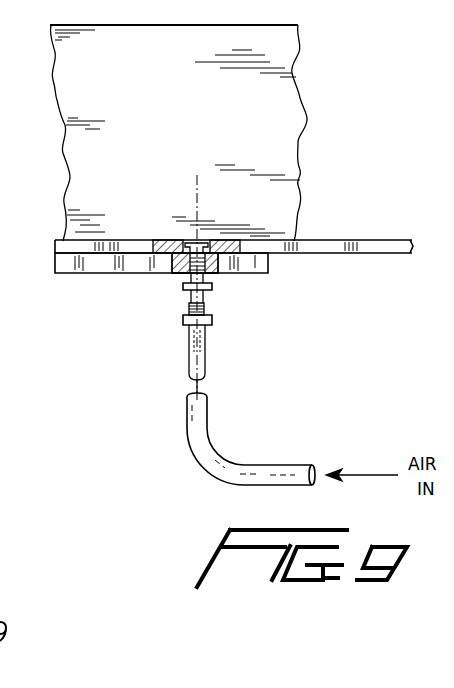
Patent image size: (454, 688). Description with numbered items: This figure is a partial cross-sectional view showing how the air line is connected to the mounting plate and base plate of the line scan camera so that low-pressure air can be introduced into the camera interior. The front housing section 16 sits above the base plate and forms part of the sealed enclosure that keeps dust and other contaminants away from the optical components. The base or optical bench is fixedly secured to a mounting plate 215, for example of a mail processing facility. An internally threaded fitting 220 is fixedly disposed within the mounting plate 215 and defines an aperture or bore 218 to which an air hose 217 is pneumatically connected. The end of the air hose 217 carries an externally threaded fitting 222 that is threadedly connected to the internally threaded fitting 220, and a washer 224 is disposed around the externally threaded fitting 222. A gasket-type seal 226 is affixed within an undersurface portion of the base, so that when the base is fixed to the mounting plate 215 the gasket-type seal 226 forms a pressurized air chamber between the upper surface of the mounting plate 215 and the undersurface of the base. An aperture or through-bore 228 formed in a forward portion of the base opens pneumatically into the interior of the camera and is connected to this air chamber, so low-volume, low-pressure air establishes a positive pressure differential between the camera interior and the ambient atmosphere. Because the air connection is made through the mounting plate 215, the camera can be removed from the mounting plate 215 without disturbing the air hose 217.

The front housing section 16 is at (188, 125).
The mounting plate 215 is at (90, 273).
The air hose 217 is at (208, 420).
The aperture or bore 218 is at (205, 276).
The internally threaded fitting 220 is at (175, 275).
The externally threaded fitting 222 is at (207, 308).
The washer 224 is at (185, 287).
The gasket-type seal 226 is at (183, 240).
The aperture or through-bore 228 is at (207, 240).